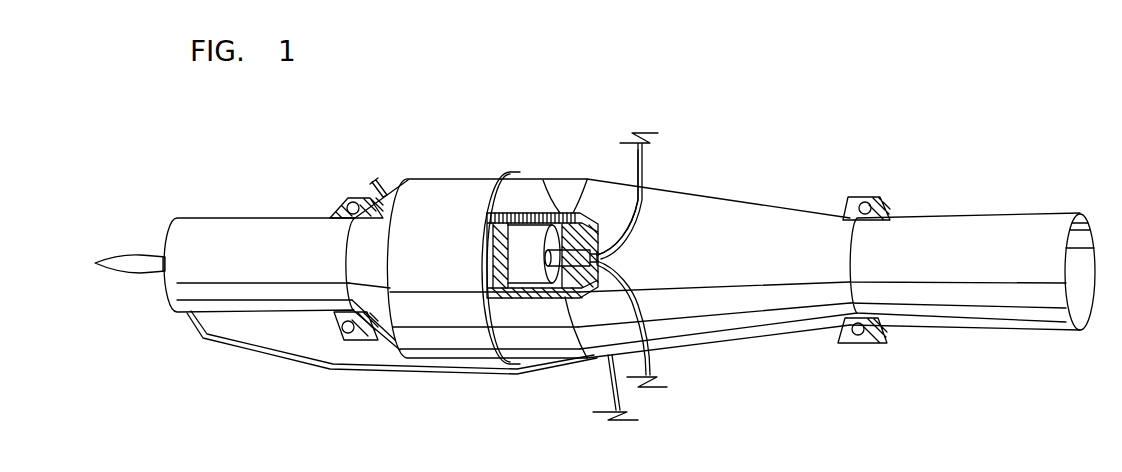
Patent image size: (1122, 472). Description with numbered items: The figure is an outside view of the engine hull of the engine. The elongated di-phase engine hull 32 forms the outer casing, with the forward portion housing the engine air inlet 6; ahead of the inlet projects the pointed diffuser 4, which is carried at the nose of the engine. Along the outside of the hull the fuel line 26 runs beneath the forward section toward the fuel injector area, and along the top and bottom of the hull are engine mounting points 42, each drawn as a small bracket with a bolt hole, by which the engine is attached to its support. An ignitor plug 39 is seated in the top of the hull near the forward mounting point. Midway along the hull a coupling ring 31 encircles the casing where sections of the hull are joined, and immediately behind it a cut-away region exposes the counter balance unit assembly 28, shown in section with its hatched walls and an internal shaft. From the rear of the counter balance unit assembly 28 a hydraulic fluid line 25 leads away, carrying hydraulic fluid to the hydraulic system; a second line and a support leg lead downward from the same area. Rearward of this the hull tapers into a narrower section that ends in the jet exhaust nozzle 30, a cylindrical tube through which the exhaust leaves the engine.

The diffuser 4 is at (108, 257).
The engine air inlet 6 is at (177, 217).
The di-phase engine hull 32 is at (247, 217).
The engine mounting point 42 is at (333, 217).
The ignitor plug 39 is at (376, 181).
The coupling ring 31 is at (504, 172).
The counter balance unit assembly 28 is at (557, 217).
The hydraulic fluid line 25 is at (642, 169).
The fuel line 26 is at (199, 332).
The jet exhaust nozzle 30 is at (1080, 332).